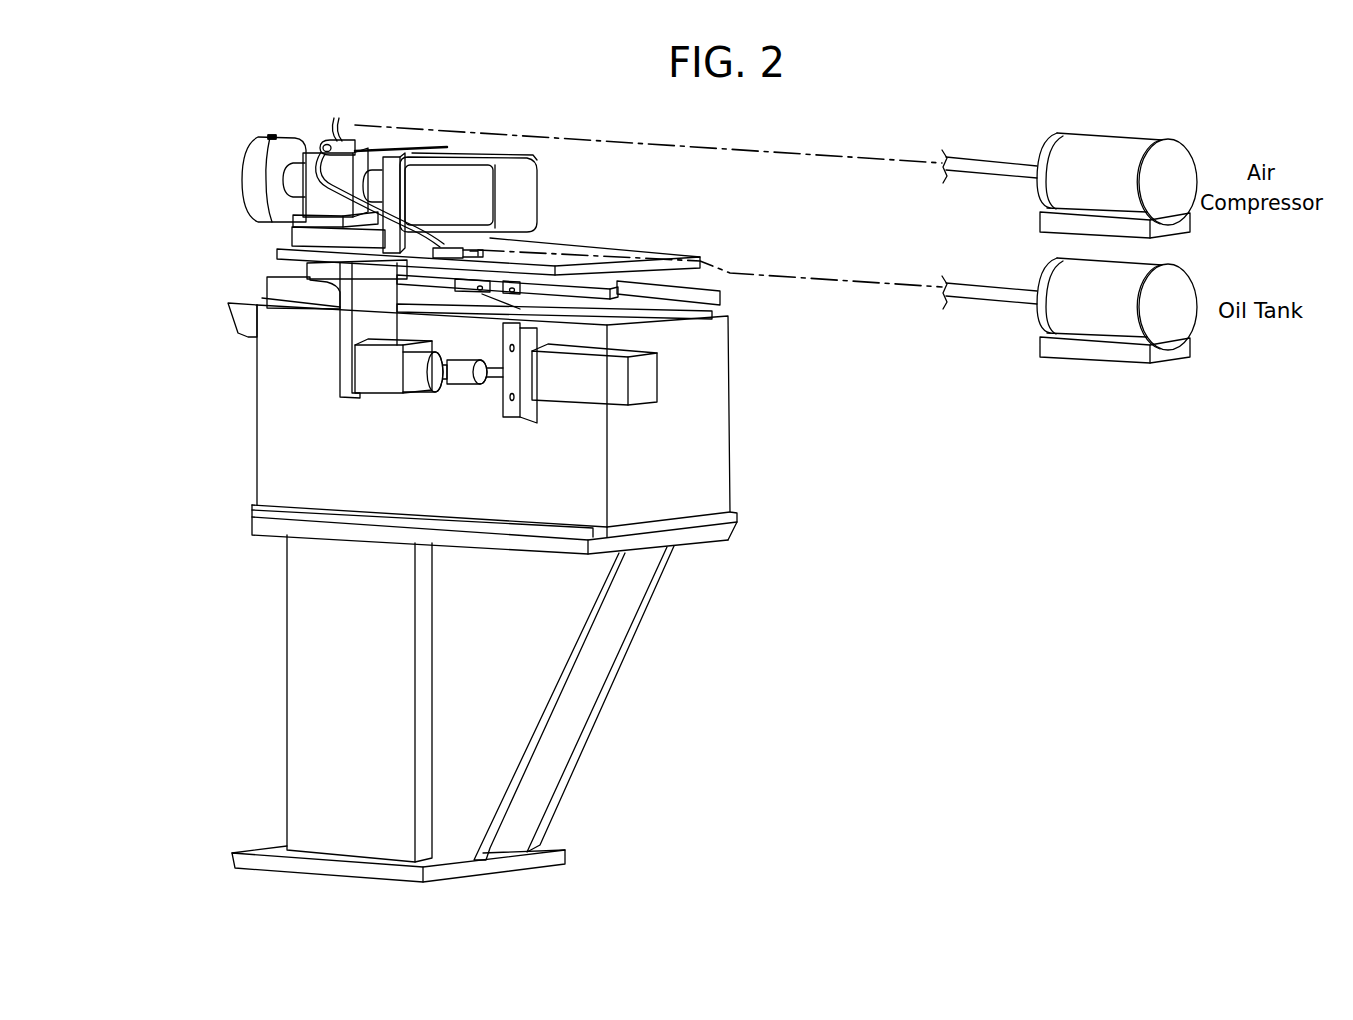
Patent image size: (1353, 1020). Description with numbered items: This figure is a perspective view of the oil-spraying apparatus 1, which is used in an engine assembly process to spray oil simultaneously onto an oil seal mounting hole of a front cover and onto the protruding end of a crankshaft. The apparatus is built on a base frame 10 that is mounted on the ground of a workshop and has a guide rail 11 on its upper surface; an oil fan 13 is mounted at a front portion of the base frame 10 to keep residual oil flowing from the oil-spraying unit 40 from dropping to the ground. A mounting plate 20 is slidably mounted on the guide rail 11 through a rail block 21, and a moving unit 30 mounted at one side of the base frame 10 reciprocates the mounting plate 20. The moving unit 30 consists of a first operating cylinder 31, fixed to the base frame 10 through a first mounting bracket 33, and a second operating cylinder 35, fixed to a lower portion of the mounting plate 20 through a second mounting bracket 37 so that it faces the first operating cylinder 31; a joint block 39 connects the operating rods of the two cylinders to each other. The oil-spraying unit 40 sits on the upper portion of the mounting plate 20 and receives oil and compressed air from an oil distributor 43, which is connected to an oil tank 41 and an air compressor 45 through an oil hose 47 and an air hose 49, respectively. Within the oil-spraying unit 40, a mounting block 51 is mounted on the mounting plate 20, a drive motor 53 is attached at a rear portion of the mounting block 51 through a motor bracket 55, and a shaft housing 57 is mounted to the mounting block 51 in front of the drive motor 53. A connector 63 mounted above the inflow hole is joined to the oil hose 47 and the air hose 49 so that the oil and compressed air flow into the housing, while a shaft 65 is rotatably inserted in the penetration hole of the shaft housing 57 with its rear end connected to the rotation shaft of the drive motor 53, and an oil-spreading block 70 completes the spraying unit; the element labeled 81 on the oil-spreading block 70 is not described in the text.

The oil-spraying apparatus 1 is at (922, 459).
The base frame 10 is at (262, 430).
The guide rail 11 is at (268, 287).
The oil fan 13 is at (240, 308).
The mounting plate 20 is at (652, 257).
The rail block 21 is at (600, 307).
The moving unit 30 is at (497, 425).
The first operating cylinder 31 is at (653, 385).
The first mounting bracket 33 is at (550, 413).
The second operating cylinder 35 is at (358, 388).
The second mounting bracket 37 is at (322, 355).
The joint block 39 is at (460, 388).
The oil-spraying unit 40 is at (545, 149).
The oil tank 41 is at (1098, 322).
The oil distributor 43 is at (468, 253).
The air compressor 45 is at (1128, 142).
The oil hose 47 is at (265, 198).
The air hose 49 is at (340, 128).
The mounting block 51 is at (295, 242).
The drive motor 53 is at (532, 187).
The motor bracket 55 is at (398, 160).
The shaft housing 57 is at (360, 150).
The connector 63 is at (322, 148).
The shaft 65 is at (300, 181).
The oil-spreading block 70 is at (222, 145).
The sensor 81 is at (255, 127).